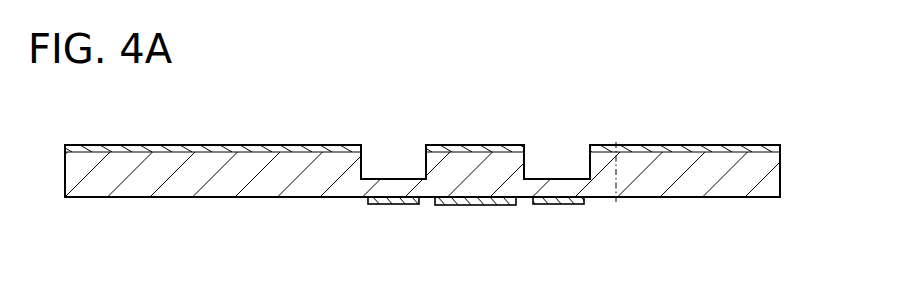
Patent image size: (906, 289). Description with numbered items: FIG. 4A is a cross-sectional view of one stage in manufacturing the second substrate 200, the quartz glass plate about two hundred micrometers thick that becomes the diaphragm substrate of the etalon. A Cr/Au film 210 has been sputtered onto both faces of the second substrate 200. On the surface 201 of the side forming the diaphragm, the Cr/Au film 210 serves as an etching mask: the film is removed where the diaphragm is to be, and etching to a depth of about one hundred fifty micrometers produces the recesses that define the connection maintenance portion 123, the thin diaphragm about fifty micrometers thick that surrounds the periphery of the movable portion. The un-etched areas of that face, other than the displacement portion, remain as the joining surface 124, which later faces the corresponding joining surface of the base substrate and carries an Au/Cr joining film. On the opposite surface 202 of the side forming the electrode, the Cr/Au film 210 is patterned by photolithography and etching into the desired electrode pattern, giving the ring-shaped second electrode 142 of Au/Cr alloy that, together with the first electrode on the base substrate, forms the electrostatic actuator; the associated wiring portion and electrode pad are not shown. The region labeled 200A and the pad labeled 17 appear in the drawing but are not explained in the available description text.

The second substrate 200 is at (732, 79).
The Cr/Au film 210 is at (685, 145).
The surface of the side forming the diaphragm 201 is at (767, 147).
The surface of the side forming the electrode 202 is at (763, 198).
The mounting region 200A is at (688, 198).
The joining surface 124 is at (616, 205).
The connection maintenance portion 123 is at (392, 178).
The second electrode 142 is at (388, 205).
The electrode pad 17 is at (473, 206).